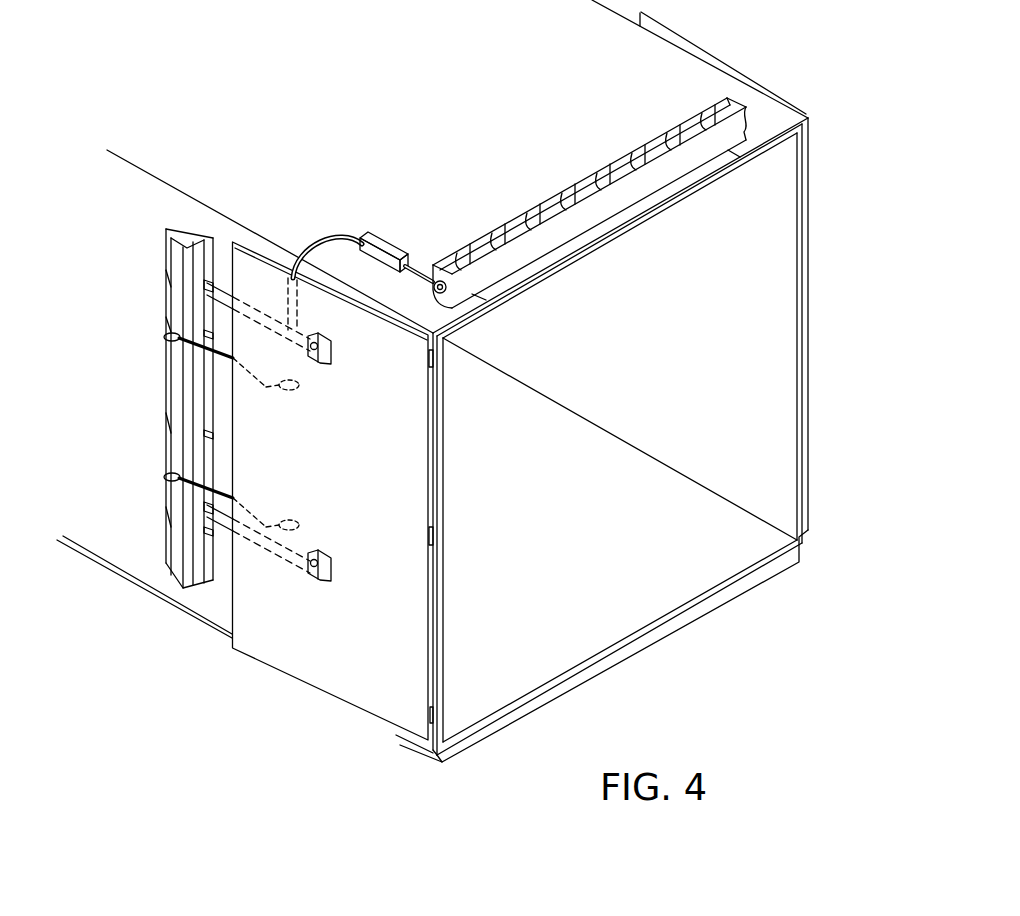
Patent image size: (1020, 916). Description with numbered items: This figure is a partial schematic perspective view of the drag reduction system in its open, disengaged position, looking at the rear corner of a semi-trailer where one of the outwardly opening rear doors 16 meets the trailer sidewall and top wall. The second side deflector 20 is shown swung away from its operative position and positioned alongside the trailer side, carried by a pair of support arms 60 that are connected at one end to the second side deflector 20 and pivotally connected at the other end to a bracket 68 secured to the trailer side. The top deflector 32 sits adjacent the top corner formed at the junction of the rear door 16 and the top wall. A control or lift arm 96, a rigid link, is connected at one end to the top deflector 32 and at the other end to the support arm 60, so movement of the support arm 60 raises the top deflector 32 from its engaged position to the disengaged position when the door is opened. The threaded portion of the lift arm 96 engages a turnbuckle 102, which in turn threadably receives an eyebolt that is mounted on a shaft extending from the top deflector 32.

The rear door 16 is at (287, 655).
The second side deflector 20 is at (181, 231).
The top deflector 32 is at (557, 193).
The support arm 60 is at (222, 296).
The bracket 68 is at (333, 363).
The control or lift arm 96 is at (323, 237).
The turnbuckle 102 is at (387, 249).